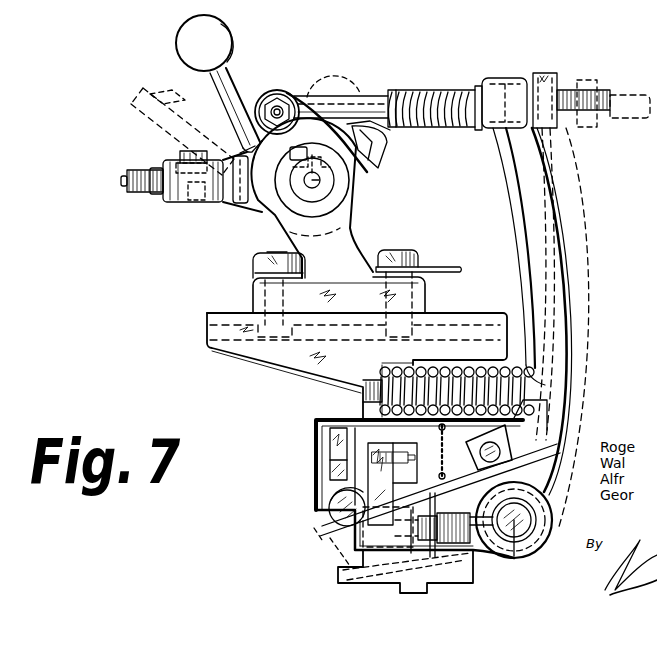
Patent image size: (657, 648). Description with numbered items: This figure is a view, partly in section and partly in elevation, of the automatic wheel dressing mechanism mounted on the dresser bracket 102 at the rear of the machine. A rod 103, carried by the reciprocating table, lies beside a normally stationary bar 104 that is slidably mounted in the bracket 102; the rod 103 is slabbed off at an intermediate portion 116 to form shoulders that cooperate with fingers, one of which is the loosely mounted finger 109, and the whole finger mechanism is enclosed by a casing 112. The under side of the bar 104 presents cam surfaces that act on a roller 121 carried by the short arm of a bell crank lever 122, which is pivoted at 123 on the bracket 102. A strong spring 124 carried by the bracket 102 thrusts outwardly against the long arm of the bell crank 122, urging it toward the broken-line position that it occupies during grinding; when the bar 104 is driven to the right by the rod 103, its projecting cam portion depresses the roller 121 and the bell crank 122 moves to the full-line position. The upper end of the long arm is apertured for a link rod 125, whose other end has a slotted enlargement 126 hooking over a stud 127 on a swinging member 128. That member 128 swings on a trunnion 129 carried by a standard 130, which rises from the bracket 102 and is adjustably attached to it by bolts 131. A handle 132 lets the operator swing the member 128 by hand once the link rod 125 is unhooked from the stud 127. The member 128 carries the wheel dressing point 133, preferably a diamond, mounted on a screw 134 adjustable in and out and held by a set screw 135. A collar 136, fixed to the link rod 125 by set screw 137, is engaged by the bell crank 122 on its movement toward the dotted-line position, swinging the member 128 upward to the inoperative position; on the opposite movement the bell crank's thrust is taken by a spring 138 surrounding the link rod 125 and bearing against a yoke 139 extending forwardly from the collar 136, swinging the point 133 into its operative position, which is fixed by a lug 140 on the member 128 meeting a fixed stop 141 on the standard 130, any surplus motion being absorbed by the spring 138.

The dresser bracket 102 is at (280, 358).
The rod 103 is at (335, 505).
The slidable bar 104 is at (373, 478).
The finger 109 is at (340, 530).
The casing 112 is at (316, 421).
The slabbed-off portion 116 is at (345, 530).
The roller 121 is at (383, 560).
The bell crank lever 122 is at (557, 277).
The pivot 123 is at (516, 540).
The spring 124 is at (443, 362).
The link rod 125 is at (347, 107).
The slotted enlargement 126 is at (281, 92).
The stud 127 is at (276, 106).
The swinging member 128 is at (217, 198).
The trunnion 129 is at (320, 181).
The standard 130 is at (353, 237).
The bolts 131 is at (268, 256).
The handle 132 is at (228, 72).
The wheel dressing point 133 is at (121, 179).
The screw 134 is at (154, 194).
The set screw 135 is at (183, 153).
The collar 136 is at (553, 83).
The set screw 137 is at (545, 74).
The spring 138 is at (462, 92).
The yoke 139 is at (410, 90).
The lug 140 is at (380, 148).
The fixed stop 141 is at (370, 123).